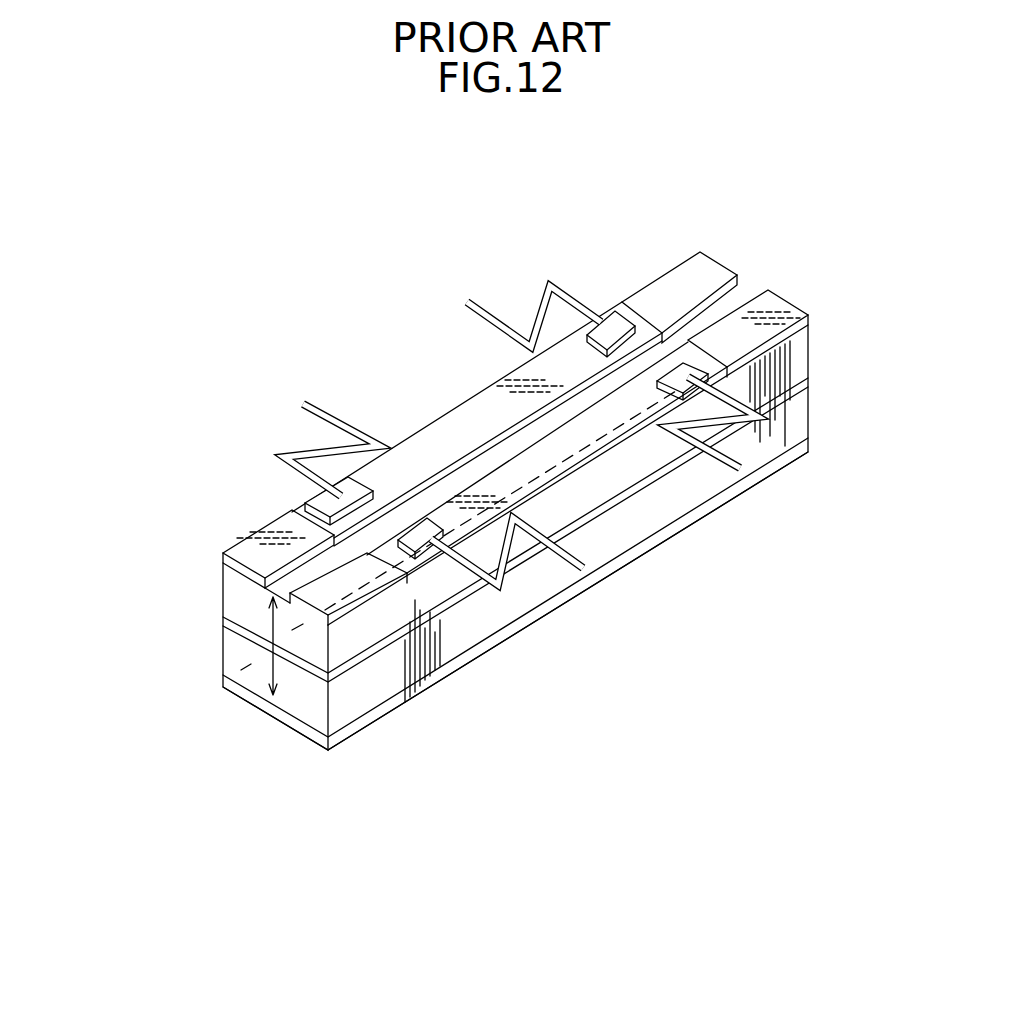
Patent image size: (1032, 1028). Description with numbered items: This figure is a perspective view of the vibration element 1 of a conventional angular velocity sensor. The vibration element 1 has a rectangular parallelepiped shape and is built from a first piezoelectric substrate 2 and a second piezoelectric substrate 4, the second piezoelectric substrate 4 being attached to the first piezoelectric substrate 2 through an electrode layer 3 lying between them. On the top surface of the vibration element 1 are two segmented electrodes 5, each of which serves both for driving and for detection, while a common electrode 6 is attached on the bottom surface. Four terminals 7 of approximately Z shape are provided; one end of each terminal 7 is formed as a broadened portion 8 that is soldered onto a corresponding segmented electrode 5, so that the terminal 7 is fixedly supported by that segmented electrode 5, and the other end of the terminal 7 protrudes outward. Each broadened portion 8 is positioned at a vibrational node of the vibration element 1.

The vibration element 1 is at (739, 300).
The first piezoelectric substrate 2 is at (228, 590).
The electrode layer 3 is at (288, 655).
The second piezoelectric substrate 4 is at (302, 703).
The segmented electrodes 5 is at (462, 415).
The common electrode 6 is at (367, 727).
The terminals 7 is at (538, 297).
The broadened portion 8 is at (682, 368).